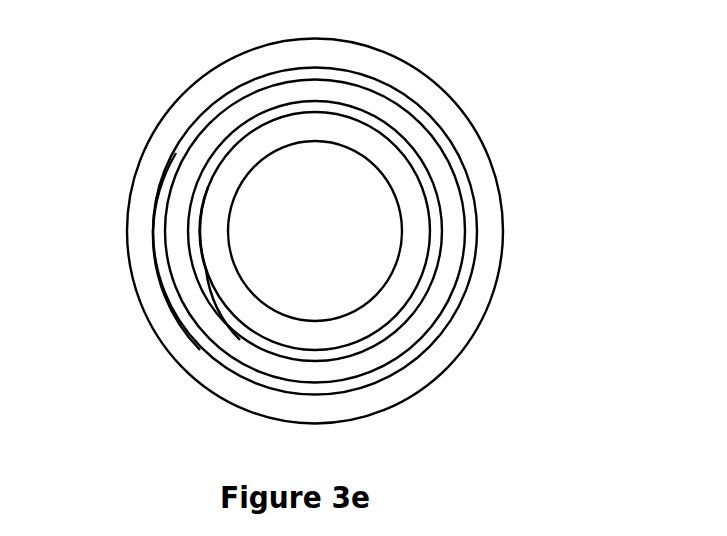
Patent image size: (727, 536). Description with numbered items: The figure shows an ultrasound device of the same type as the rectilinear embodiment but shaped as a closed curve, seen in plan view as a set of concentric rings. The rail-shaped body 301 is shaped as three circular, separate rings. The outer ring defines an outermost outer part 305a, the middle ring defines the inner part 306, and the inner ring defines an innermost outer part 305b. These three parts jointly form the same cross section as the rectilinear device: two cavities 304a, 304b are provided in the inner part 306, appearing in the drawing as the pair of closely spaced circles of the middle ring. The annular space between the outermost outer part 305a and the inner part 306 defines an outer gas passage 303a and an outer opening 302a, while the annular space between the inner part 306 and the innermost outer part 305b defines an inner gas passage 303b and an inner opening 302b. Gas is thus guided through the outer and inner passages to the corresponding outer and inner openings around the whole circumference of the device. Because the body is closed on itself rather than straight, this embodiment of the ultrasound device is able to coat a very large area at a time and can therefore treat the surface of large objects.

The rail-shaped body 301 is at (505, 225).
The outer opening 302a is at (159, 187).
The inner opening 302b is at (201, 187).
The outer gas passage 303a is at (160, 288).
The inner gas passage 303b is at (203, 267).
The cavity 304a is at (163, 232).
The cavity 304b is at (195, 224).
The outermost outer part 305a is at (472, 138).
The innermost outer part 305b is at (382, 167).
The inner part 306 is at (413, 125).